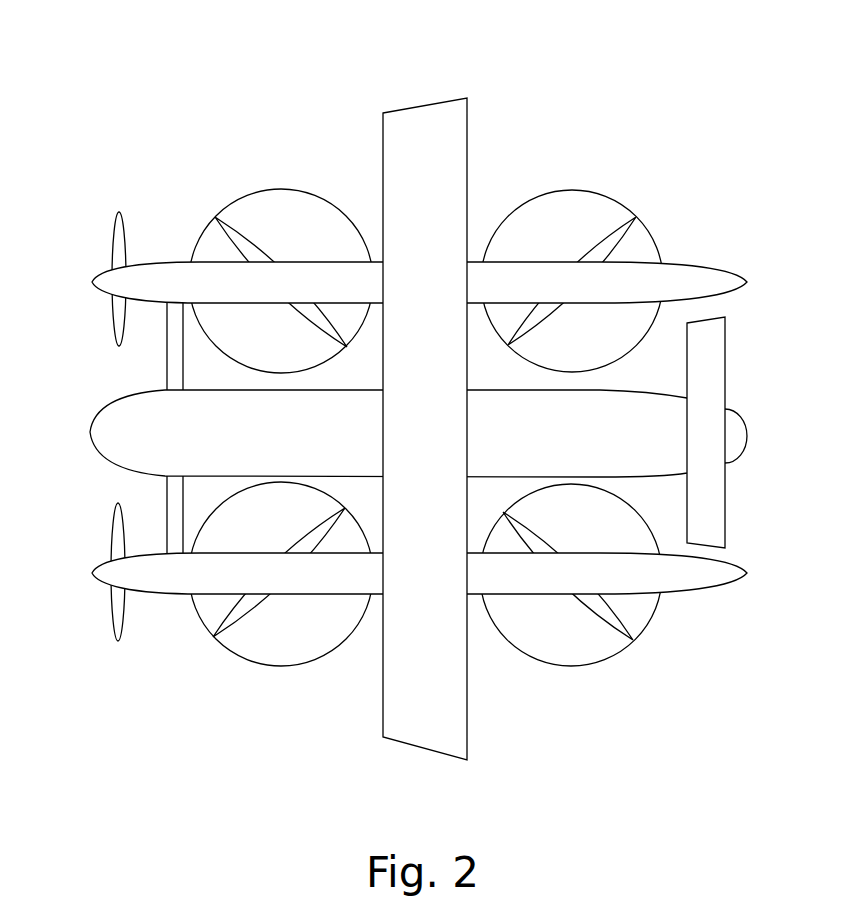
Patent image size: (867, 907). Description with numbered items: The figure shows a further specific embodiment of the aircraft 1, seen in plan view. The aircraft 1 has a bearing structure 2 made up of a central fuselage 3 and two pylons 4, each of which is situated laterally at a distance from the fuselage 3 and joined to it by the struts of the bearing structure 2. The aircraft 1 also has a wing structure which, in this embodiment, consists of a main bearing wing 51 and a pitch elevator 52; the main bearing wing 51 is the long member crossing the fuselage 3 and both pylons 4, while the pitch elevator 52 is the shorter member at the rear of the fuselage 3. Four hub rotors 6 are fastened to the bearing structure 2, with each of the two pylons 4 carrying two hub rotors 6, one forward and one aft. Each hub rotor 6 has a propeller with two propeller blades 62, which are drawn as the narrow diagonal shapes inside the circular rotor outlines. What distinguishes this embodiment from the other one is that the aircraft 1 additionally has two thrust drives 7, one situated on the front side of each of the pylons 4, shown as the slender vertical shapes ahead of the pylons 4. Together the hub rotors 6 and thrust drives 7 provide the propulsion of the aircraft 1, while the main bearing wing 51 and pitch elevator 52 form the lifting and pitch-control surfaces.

The aircraft 1 is at (147, 78).
The bearing structure 2 is at (173, 345).
The fuselage 3 is at (551, 449).
The pylon 4 is at (723, 278).
The hub rotor 6 is at (267, 217).
The thrust drive 7 is at (112, 248).
The main bearing wing 51 is at (470, 142).
The pitch elevator 52 is at (727, 352).
The propeller blade 62 is at (313, 310).